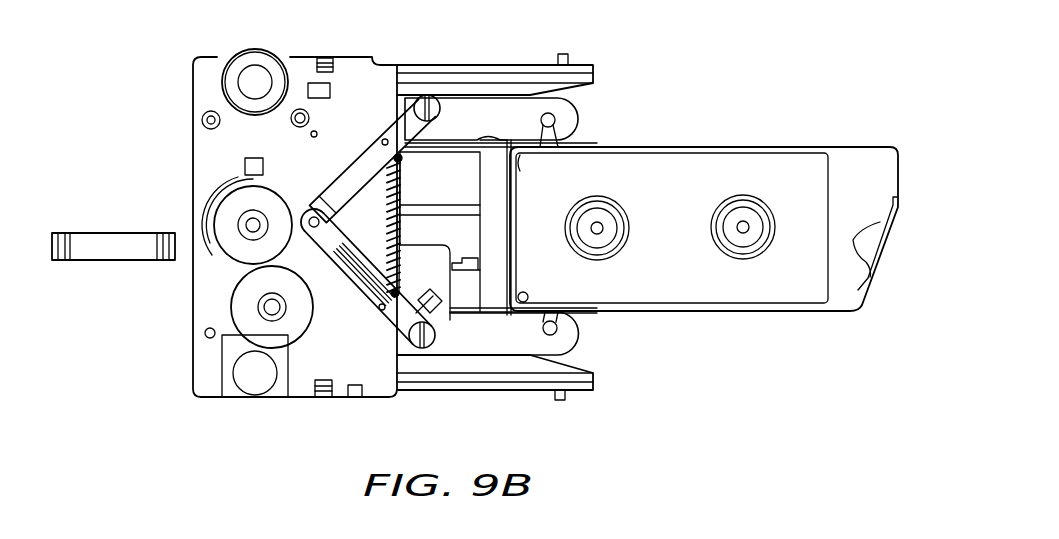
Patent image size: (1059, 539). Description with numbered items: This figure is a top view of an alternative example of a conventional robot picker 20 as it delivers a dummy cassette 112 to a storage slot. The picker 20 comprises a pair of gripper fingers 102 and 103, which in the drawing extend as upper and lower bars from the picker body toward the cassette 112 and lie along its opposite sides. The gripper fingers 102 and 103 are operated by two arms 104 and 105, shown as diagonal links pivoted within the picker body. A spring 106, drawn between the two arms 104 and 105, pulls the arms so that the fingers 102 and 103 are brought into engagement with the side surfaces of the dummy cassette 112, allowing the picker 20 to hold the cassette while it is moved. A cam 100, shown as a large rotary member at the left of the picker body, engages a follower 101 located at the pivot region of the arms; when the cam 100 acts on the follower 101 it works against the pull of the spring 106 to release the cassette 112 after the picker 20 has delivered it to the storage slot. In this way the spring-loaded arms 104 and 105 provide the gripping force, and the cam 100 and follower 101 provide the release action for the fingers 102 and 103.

The picker 20 is at (645, 76).
The cam 100 is at (215, 203).
The follower 101 is at (313, 210).
The gripper finger 102 is at (485, 97).
The gripper finger 103 is at (482, 357).
The arm 104 is at (392, 124).
The arm 105 is at (390, 323).
The spring 106 is at (403, 198).
The cassette 112 is at (843, 146).